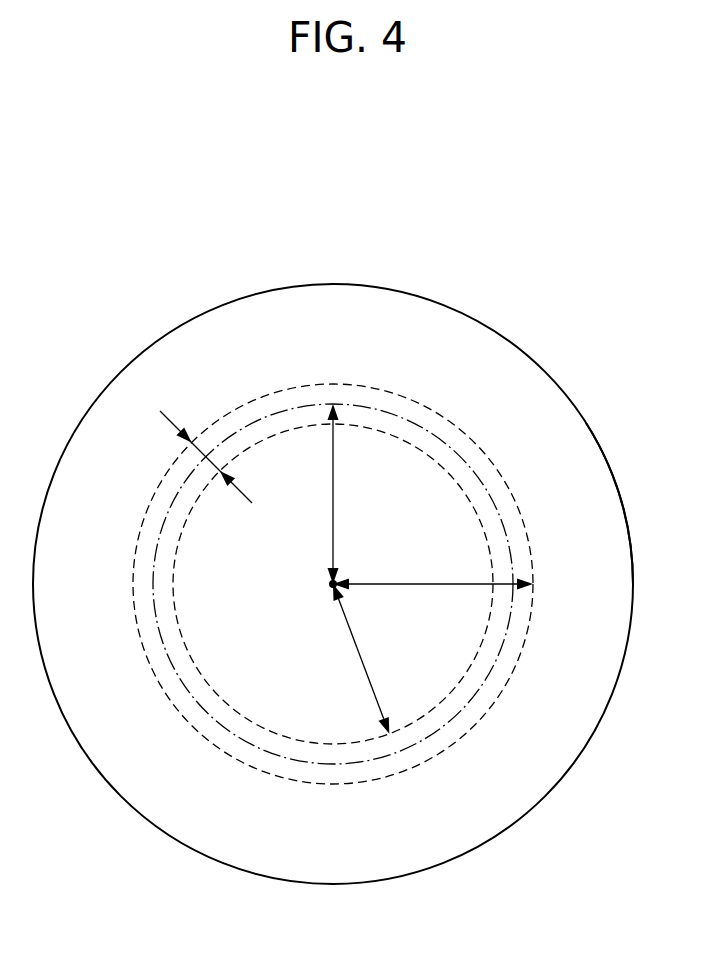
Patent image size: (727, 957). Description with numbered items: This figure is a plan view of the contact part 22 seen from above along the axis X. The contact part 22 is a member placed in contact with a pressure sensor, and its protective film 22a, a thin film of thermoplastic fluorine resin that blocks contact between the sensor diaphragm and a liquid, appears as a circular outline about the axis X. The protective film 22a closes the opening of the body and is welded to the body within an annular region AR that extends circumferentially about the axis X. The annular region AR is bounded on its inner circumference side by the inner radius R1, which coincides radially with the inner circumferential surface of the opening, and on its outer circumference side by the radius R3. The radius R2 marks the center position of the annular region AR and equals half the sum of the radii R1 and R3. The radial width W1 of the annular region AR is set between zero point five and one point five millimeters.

The contact part 22 is at (562, 245).
The protective film 22a is at (578, 431).
The annular region AR is at (332, 385).
The axis X is at (338, 580).
The inner radius R1 is at (364, 659).
The inner radius of center position R2 is at (318, 494).
The inner radius of outer end R3 is at (433, 569).
The width W1 is at (206, 446).